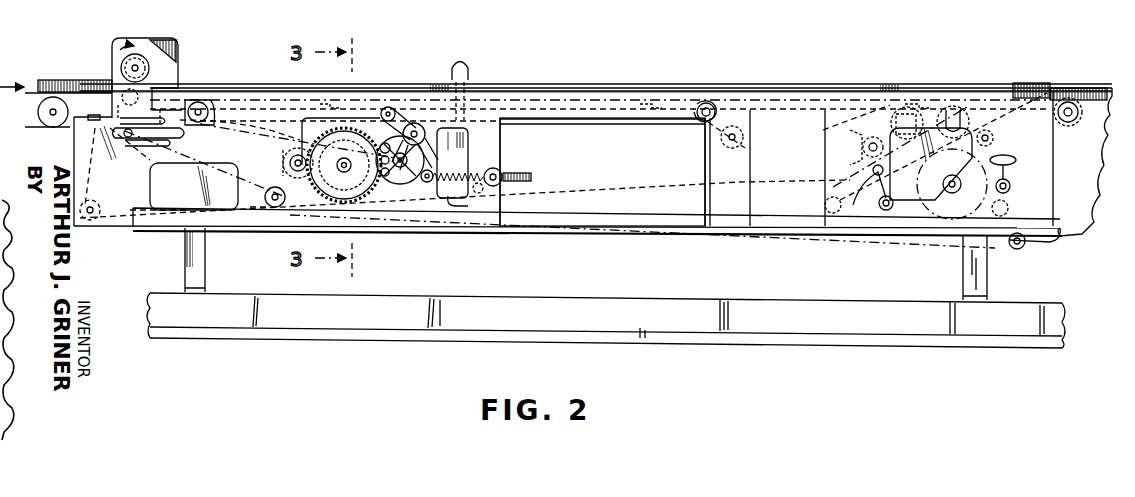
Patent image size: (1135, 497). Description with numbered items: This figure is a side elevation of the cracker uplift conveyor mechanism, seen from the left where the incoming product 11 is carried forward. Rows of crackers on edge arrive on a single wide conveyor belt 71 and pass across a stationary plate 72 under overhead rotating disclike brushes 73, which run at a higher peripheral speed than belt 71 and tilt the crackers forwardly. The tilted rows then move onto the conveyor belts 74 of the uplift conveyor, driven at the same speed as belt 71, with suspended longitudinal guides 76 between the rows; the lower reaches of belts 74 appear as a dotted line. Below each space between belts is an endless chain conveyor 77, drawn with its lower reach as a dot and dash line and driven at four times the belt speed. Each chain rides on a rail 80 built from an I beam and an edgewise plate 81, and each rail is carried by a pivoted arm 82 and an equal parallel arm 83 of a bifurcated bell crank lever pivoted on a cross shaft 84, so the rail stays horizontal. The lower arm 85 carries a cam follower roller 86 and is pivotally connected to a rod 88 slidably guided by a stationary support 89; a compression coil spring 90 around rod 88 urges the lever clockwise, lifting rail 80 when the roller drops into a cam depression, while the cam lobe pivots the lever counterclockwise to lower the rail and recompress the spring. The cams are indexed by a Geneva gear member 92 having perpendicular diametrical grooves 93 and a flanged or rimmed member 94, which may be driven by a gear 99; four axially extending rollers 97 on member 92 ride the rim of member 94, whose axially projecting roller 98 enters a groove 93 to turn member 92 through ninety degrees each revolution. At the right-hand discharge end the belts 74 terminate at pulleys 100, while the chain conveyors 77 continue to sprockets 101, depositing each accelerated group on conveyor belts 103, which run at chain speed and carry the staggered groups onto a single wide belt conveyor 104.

The strip of material 11 is at (55, 80).
The conveyor belt 71 is at (27, 103).
The stationary plate 72 is at (97, 104).
The rotating disclike brushes 73 is at (118, 76).
The conveyor belts 74 is at (90, 173).
The suspended longitudinal guides 76 is at (562, 91).
The endless chain conveyor 77 is at (196, 174).
The rail 80 is at (672, 126).
The edgewise plate 81 is at (696, 104).
The pivoted arm 82 is at (708, 128).
The parallel arm 83 is at (406, 108).
The cross shaft 84 is at (416, 132).
The lower arm 85 is at (438, 158).
The cam follower roller 86 is at (437, 164).
The rod 88 is at (531, 176).
The stationary support 89 is at (497, 170).
The compression coil spring 90 is at (445, 200).
The Geneva gear member 92 is at (390, 198).
The diametrical grooves 93 is at (408, 195).
The flanged or rimmed member 94 is at (362, 200).
The axially extending rollers 97 is at (385, 145).
The axially projecting roller 98 is at (322, 176).
The gear 99 is at (320, 188).
The pulleys 100 is at (897, 90).
The sprockets 101 is at (982, 114).
The conveyor belts 103 is at (995, 92).
The single wide belt conveyor 104 is at (1092, 152).